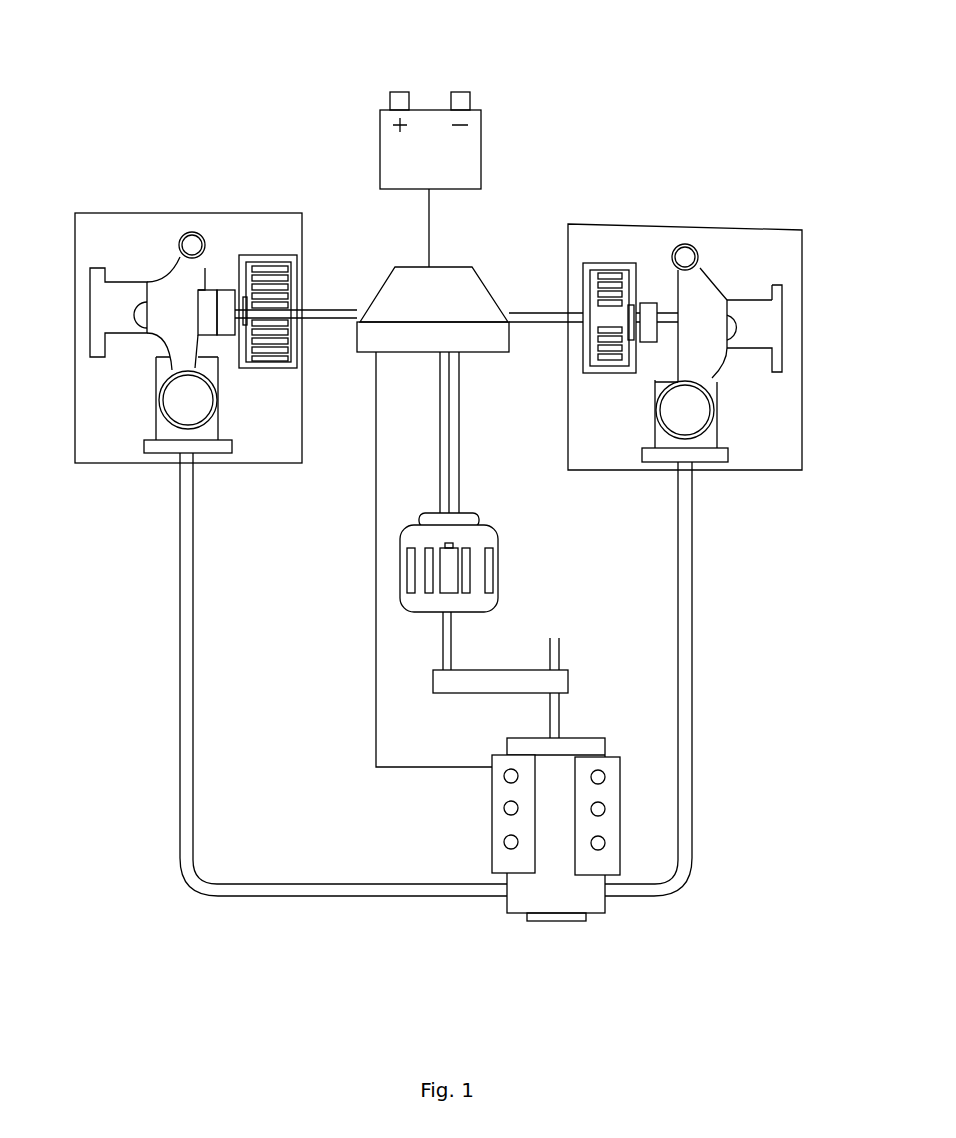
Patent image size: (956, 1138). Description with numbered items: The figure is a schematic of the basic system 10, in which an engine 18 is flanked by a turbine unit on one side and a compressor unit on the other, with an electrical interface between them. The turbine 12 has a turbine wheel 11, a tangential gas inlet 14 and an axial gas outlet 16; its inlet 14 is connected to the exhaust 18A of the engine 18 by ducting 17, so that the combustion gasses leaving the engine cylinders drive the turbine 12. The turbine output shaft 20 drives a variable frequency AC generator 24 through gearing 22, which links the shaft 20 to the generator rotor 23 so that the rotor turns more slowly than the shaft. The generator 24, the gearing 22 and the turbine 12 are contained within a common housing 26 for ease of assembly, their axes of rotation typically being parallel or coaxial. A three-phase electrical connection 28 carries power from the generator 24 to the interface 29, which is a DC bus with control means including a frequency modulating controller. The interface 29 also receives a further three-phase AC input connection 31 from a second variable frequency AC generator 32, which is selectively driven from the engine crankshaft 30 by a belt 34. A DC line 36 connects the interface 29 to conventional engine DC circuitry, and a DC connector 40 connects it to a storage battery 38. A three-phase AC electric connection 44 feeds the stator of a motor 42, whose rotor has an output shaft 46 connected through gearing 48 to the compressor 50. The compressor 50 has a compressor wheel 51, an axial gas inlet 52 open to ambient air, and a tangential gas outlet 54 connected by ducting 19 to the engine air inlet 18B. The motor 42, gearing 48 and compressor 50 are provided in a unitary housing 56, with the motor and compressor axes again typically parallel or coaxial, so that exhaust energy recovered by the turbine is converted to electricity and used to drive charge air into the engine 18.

The system 10 is at (262, 62).
The turbine wheel 11 is at (168, 300).
The turbine 12 is at (213, 324).
The tangential gas inlet 14 is at (192, 445).
The axial gas outlet 16 is at (108, 305).
The ducting 17 is at (188, 786).
The engine 18 is at (582, 856).
The exhaust 18A is at (505, 893).
The engine air inlet 18B is at (617, 892).
The ducting 19 is at (690, 713).
The turbine output shaft 20 is at (208, 307).
The gearing 22 is at (228, 300).
The generator rotor 23 is at (262, 310).
The variable frequency AC generator 24 is at (300, 256).
The common housing 26 is at (288, 212).
The three-phase electrical connection 28 is at (355, 310).
The interface 29 is at (473, 268).
The engine crankshaft 30 is at (561, 655).
The three-phase AC electric input connection 31 is at (459, 433).
The variable frequency AC generator 32 is at (498, 590).
The belt 34 is at (569, 684).
The DC line 36 is at (424, 768).
The battery 38 is at (481, 133).
The DC connector 40 is at (430, 215).
The motor 42 is at (600, 263).
The three-phase AC electric connection 44 is at (531, 311).
The output shaft 46 is at (648, 302).
The gearing 48 is at (675, 300).
The compressor 50 is at (678, 335).
The compressor wheel 51 is at (708, 340).
The axial gas inlet 52 is at (765, 318).
The tangential gas outlet 54 is at (641, 398).
The unitary housing 56 is at (732, 228).